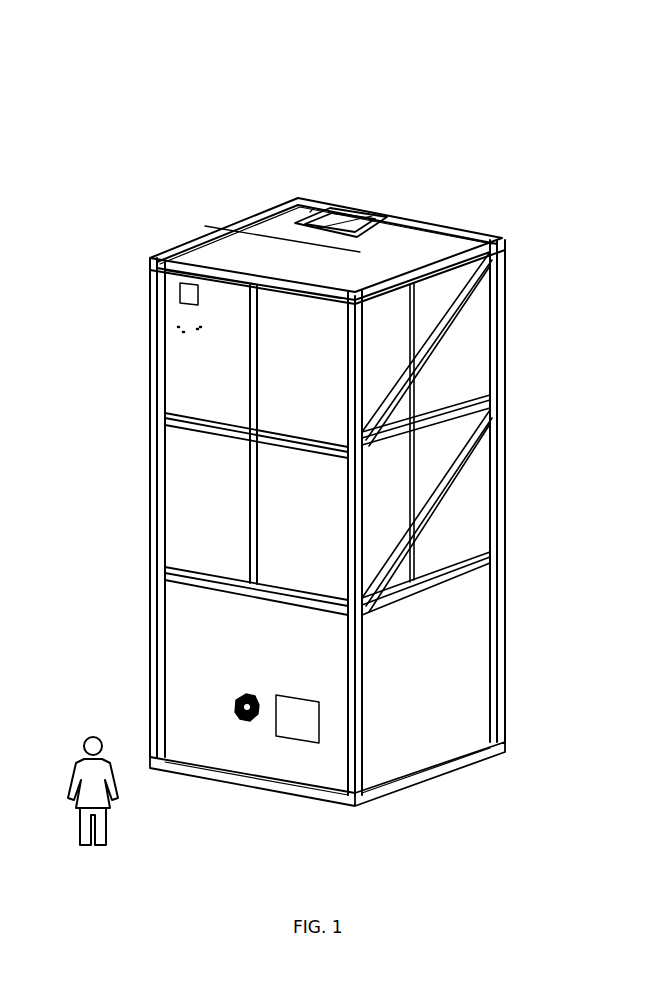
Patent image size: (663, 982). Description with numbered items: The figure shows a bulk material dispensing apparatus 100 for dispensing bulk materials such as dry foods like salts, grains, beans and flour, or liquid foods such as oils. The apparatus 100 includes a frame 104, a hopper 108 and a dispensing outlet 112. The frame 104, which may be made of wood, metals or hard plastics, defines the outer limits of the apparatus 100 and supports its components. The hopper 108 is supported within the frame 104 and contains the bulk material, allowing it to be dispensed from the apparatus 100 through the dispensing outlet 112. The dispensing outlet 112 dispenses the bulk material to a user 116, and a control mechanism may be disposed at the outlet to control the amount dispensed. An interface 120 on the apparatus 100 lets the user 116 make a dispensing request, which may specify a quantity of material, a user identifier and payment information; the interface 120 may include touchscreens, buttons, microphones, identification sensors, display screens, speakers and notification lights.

The bulk material dispensing apparatus 100 is at (200, 100).
The frame 104 is at (209, 230).
The hopper 108 is at (190, 487).
The dispensing outlet 112 is at (233, 707).
The user 116 is at (107, 826).
The interface 120 is at (297, 740).